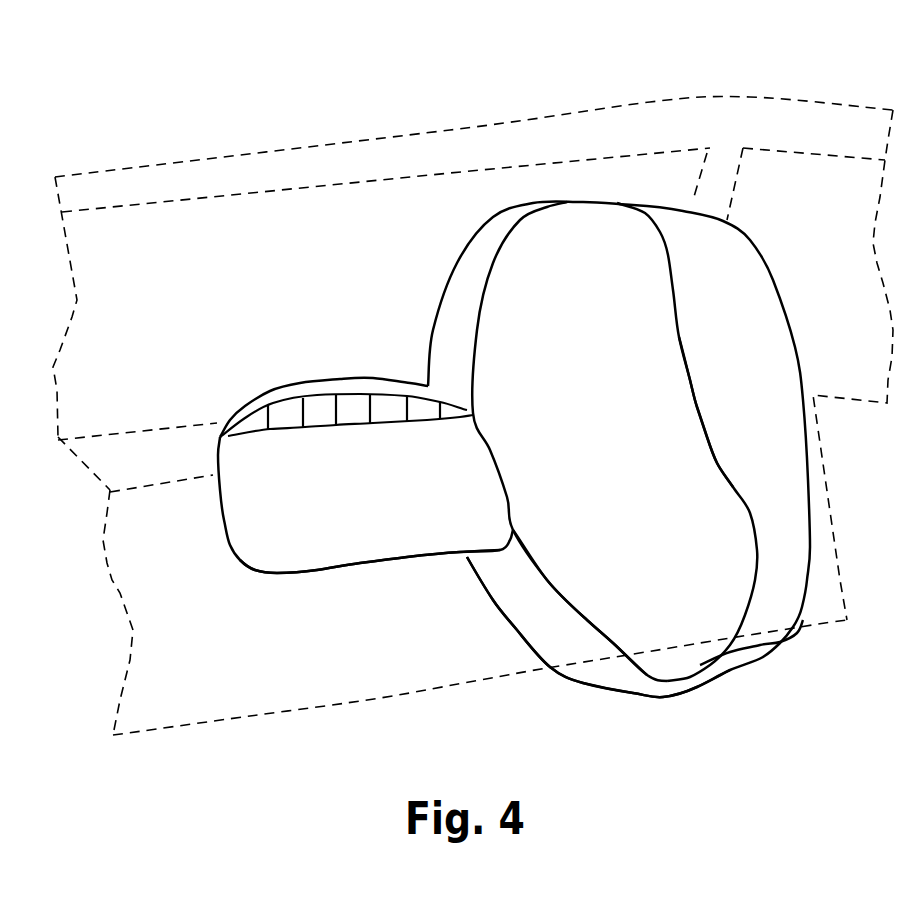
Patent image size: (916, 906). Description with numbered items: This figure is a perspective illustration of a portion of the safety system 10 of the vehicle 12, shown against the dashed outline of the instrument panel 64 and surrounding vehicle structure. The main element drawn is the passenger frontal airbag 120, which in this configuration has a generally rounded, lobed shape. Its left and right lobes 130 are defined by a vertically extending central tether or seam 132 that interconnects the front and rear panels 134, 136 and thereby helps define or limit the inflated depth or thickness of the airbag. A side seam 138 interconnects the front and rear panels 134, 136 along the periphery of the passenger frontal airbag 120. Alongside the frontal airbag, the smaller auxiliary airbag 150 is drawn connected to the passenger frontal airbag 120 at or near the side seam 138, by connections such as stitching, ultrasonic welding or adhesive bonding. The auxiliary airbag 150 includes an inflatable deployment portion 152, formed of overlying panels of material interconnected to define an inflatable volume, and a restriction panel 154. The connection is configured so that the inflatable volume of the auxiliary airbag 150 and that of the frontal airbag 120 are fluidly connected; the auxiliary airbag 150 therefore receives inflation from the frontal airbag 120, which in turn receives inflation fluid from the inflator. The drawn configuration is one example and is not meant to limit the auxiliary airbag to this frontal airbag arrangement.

The safety system 10 is at (360, 236).
The vehicle 12 is at (427, 150).
The instrument panel 64 is at (157, 457).
The passenger frontal airbag 120 is at (568, 233).
The left and right lobes 130 is at (600, 330).
The central tether or seam 132 is at (697, 392).
The front panel 134 is at (653, 630).
The rear panel 136 is at (530, 613).
The side seam 138 is at (543, 560).
The auxiliary airbag 150 is at (330, 467).
The inflatable deployment portion 152 is at (370, 387).
The restriction panel 154 is at (410, 503).